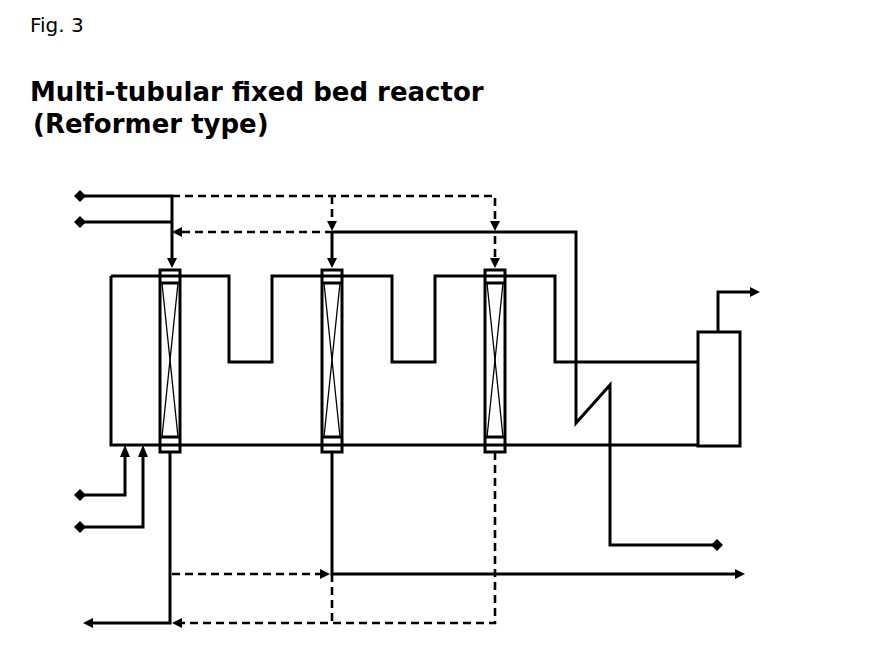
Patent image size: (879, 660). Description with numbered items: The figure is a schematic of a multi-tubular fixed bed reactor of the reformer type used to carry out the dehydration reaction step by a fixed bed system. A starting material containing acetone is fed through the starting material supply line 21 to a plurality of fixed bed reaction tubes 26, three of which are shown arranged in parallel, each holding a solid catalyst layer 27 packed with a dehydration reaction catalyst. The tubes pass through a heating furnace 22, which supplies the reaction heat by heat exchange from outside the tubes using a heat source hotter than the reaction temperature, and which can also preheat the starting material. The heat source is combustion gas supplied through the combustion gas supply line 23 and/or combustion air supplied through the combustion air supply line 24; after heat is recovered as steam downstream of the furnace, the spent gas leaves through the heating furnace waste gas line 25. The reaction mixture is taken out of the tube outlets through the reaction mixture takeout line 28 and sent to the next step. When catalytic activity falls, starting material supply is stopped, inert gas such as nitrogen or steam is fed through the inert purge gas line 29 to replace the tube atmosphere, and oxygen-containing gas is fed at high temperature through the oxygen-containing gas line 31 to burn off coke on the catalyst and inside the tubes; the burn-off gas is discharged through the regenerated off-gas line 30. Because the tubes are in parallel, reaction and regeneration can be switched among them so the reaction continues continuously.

The starting material supply line 21 is at (447, 389).
The heating furnace 22 is at (394, 361).
The combustion gas supply line 23 is at (87, 471).
The combustion air supply line 24 is at (95, 489).
The heating furnace waste gas line 25 is at (753, 292).
The fixed bed reaction tube 26 is at (308, 349).
The solid catalyst layer 27 is at (315, 360).
The reaction mixture takeout line 28 is at (458, 539).
The inert purge gas line 29 is at (275, 213).
The regenerated off-gas line 30 is at (281, 540).
The oxygen-containing gas line 31 is at (103, 207).